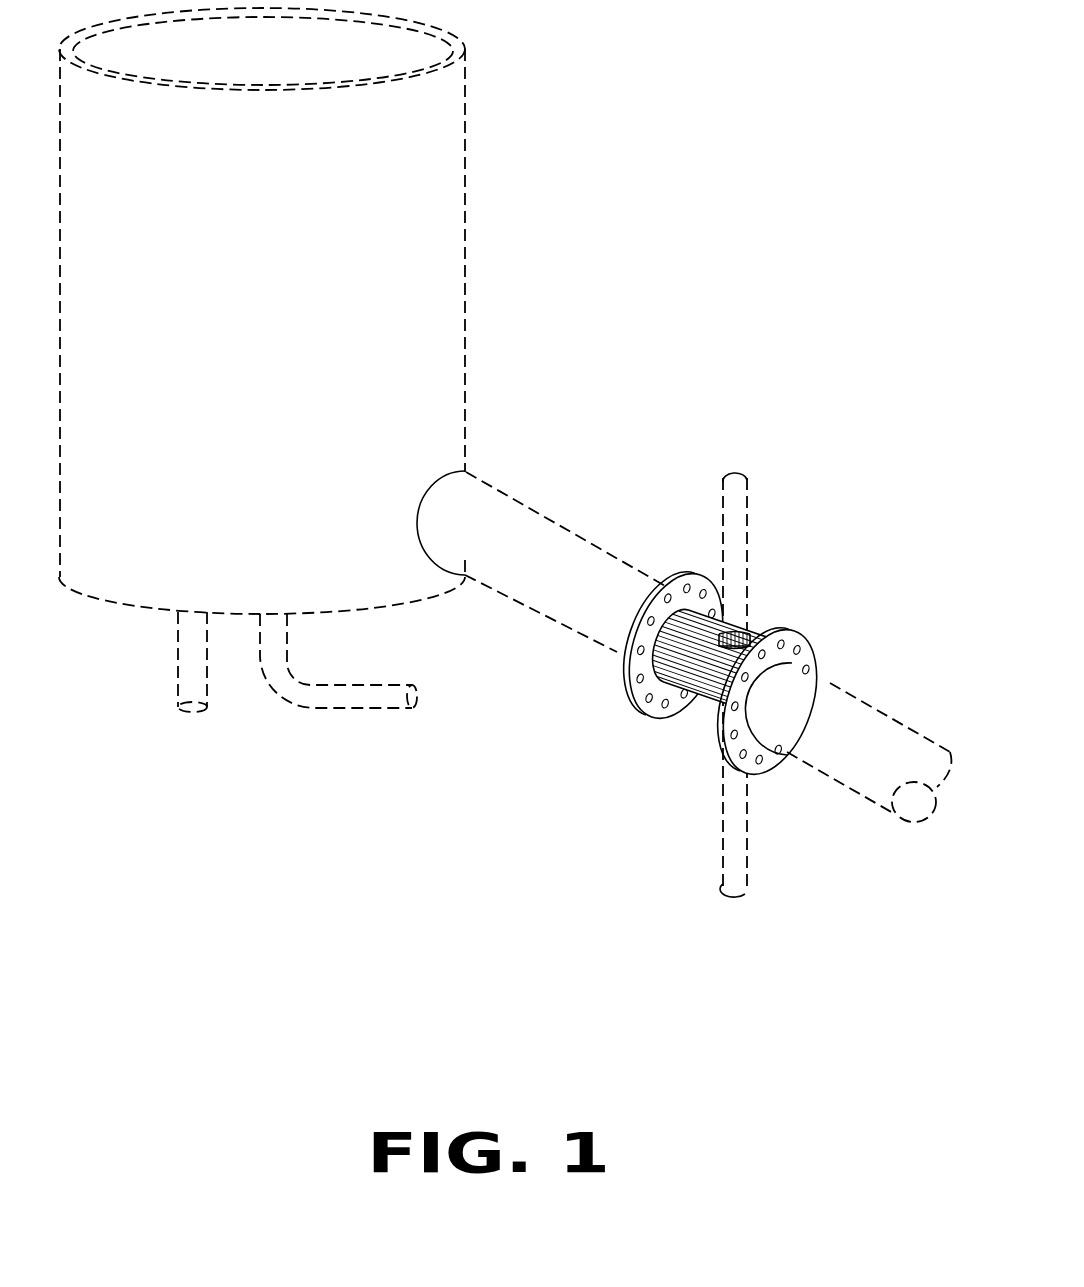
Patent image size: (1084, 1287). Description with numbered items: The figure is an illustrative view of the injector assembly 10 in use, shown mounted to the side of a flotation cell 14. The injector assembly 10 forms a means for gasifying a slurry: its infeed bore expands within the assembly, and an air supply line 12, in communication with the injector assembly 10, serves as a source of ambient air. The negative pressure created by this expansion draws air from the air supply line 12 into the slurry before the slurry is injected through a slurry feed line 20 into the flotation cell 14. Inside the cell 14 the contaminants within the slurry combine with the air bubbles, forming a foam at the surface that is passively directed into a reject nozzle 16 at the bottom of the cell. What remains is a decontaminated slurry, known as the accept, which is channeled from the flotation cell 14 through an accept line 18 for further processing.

The injector assembly 10 is at (785, 585).
The air supply line 12 is at (723, 508).
The flotation cell 14 is at (453, 200).
The reject nozzle 16 is at (345, 712).
The accept line 18 is at (193, 713).
The slurry feed line 20 is at (569, 607).